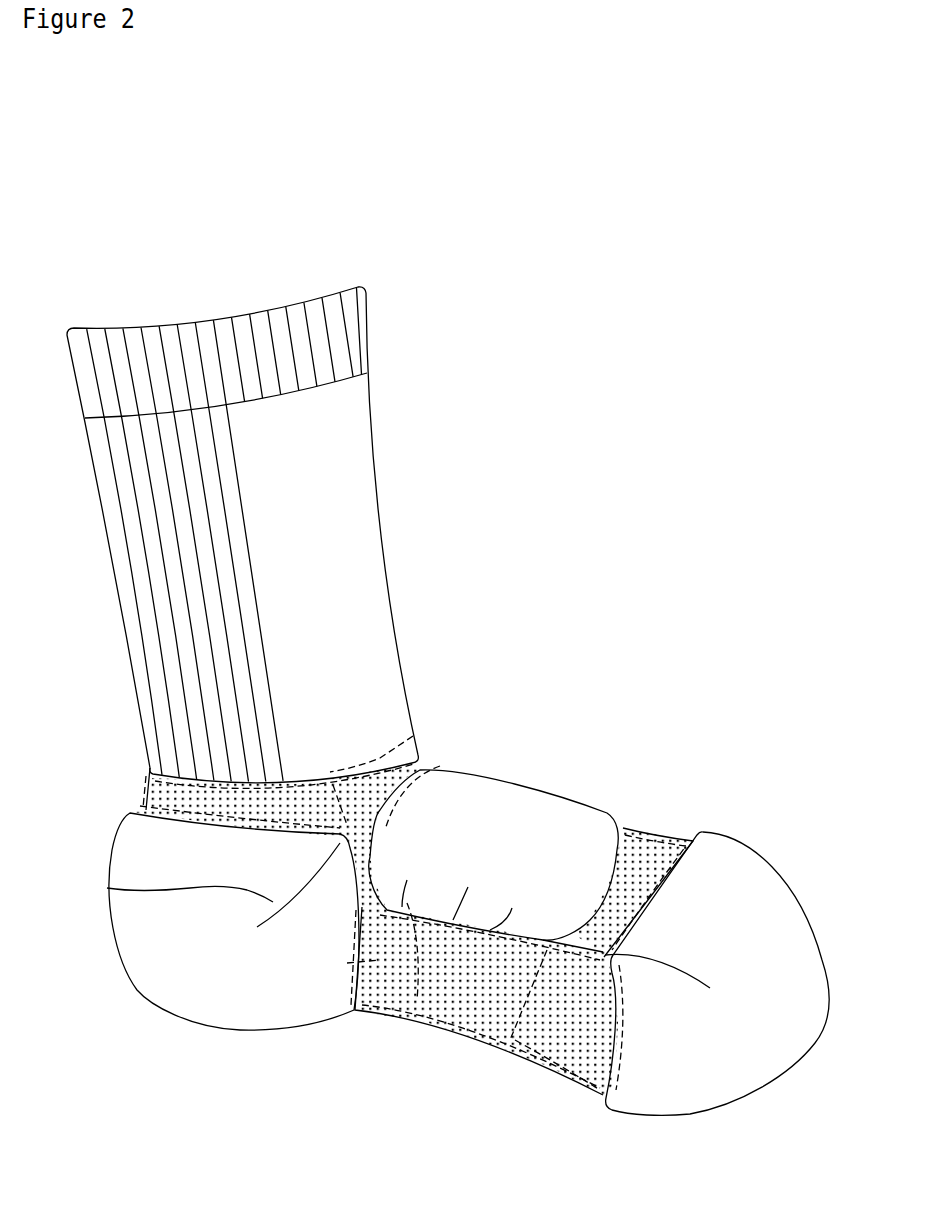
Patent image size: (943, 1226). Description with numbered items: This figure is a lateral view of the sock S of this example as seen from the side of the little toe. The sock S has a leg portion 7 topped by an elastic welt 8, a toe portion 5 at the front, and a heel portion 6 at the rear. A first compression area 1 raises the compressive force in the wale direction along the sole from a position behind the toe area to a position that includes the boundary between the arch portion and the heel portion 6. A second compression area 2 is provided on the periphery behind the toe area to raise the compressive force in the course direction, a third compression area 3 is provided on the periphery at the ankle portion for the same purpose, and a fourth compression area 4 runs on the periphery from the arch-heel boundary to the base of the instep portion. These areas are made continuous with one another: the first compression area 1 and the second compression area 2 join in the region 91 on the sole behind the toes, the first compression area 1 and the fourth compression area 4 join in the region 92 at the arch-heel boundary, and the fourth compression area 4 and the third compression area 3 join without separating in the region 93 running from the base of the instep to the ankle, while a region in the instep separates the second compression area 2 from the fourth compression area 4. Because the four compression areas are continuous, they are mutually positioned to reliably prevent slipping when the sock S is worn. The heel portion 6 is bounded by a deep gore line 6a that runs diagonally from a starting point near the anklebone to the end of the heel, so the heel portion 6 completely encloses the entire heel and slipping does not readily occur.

The sock S is at (111, 320).
The first compression area 1 is at (462, 1028).
The second compression area 2 is at (660, 830).
The third compression area 3 is at (146, 790).
The fourth compression area 4 is at (377, 1022).
The toe portion 5 is at (793, 923).
The heel portion 6 is at (153, 977).
The gore line 6a is at (107, 888).
The leg portion 7 is at (357, 469).
The elastic welt 8 is at (333, 305).
The region where first and second compression areas are continuous 91 is at (568, 1050).
The region where first and fourth compression areas are continuous 92 is at (380, 960).
The region where fourth and third compression areas are continuous 93 is at (403, 745).